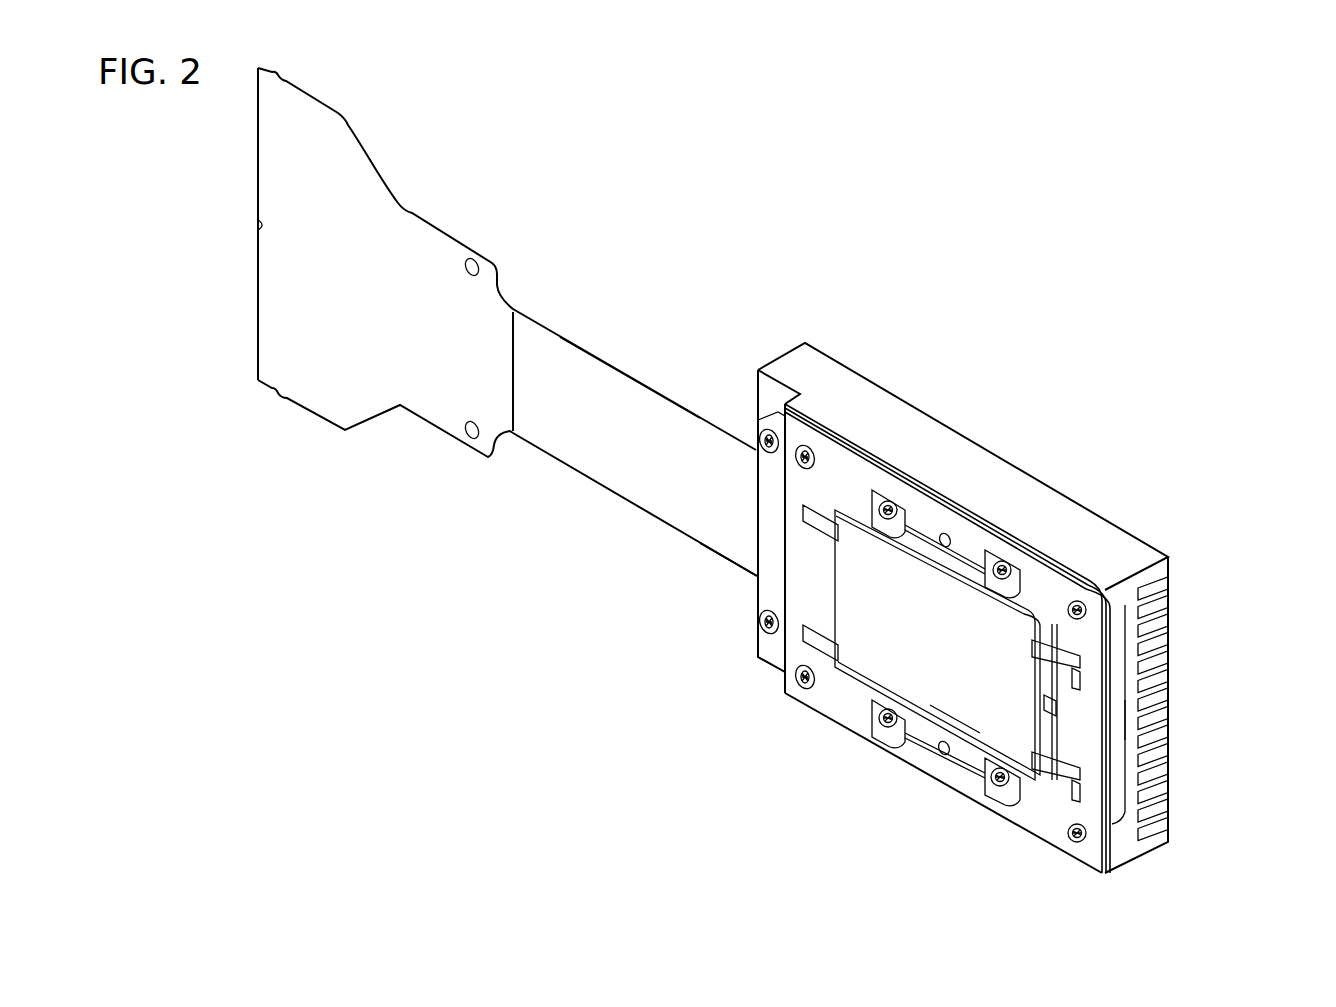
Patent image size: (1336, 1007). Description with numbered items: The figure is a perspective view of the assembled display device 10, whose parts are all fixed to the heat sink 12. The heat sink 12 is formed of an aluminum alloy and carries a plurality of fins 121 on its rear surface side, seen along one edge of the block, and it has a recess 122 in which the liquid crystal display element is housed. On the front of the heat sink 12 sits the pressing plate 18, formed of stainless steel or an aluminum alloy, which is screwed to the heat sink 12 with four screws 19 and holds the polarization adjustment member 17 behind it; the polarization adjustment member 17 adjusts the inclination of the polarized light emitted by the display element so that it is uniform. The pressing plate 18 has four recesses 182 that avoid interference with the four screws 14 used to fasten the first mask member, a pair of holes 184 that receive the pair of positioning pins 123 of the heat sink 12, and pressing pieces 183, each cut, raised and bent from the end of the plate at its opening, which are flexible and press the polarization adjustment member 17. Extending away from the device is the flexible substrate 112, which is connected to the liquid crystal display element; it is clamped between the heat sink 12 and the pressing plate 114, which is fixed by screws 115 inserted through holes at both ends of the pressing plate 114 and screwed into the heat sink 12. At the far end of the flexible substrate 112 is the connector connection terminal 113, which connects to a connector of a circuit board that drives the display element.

The display device 10 is at (1092, 378).
The heat sink 12 is at (1086, 562).
The screws 14 is at (893, 505).
The polarization adjustment member 17 is at (935, 747).
The pressing plate 18 is at (1045, 824).
The screws 19 is at (808, 448).
The flexible substrate 112 is at (638, 400).
The connector connection terminal 113 is at (358, 176).
The pressing plate 114 is at (765, 583).
The screws 115 is at (762, 415).
The fins 121 is at (1172, 624).
The recess 122 is at (1118, 730).
The pins 123 is at (950, 538).
The recesses 182 is at (880, 495).
The pressing pieces 183 is at (825, 510).
The holes 184 is at (935, 540).